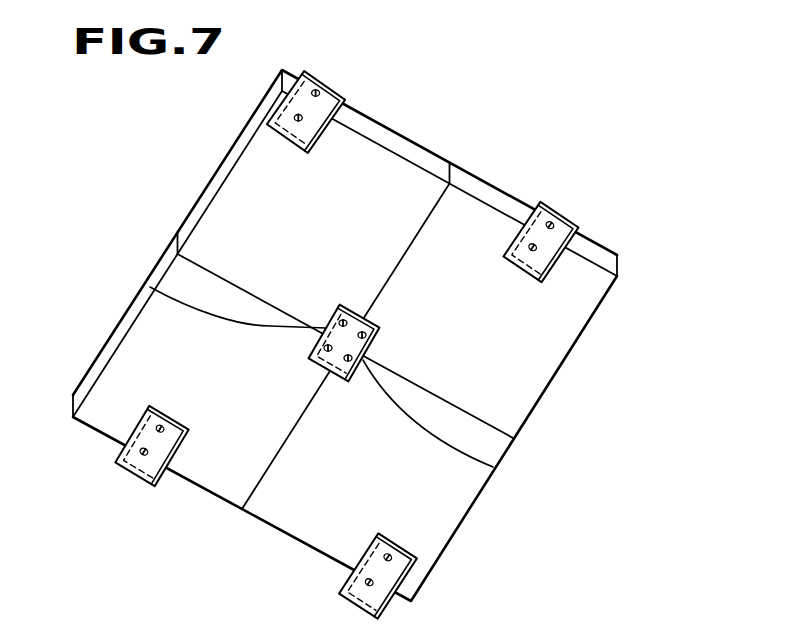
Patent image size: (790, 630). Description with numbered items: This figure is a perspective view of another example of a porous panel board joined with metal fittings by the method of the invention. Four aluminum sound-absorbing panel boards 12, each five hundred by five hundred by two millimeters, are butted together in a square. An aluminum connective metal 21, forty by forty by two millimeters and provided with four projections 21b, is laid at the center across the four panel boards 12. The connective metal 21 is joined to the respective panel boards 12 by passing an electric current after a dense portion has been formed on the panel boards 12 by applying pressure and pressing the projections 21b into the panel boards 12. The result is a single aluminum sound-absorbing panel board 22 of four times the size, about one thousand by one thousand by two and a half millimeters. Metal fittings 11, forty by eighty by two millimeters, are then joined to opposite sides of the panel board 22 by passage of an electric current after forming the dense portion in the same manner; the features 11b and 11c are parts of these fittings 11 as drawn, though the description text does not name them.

The metal fitting 11 is at (340, 87).
The screw hole of bracket 11b is at (298, 114).
The screw hole of bracket 11c is at (320, 78).
The aluminum sound-absorbing panel board 12 is at (397, 167).
The aluminum connective metal 21 is at (330, 326).
The projection 21b is at (150, 287).
The aluminum sound-absorbing panel board 22 is at (614, 229).